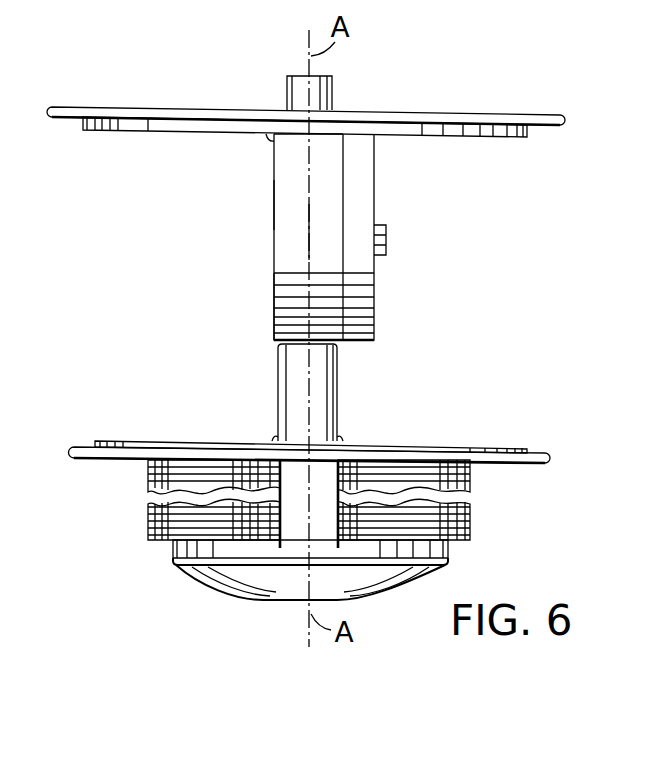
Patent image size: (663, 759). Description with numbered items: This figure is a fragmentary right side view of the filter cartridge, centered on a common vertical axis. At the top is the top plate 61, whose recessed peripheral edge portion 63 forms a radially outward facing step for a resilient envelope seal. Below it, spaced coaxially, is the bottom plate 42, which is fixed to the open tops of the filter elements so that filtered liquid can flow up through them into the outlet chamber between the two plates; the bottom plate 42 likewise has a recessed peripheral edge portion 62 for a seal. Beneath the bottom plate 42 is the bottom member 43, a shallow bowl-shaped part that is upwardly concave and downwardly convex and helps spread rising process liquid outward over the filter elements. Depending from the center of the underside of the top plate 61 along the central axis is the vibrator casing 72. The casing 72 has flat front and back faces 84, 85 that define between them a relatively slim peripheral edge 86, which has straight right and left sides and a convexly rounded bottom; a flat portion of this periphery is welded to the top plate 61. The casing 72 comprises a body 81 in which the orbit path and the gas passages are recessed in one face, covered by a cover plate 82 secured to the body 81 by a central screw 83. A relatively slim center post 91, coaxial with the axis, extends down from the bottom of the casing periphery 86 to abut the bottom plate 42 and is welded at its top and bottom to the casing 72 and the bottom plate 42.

The top plate 61 is at (400, 117).
The peripheral edge portion 63 is at (548, 134).
The front face 84 is at (374, 176).
The peripheral edge 86 is at (295, 146).
The back face 85 is at (274, 205).
The body 81 is at (305, 228).
The central screw 83 is at (386, 241).
The cover plate 82 is at (365, 280).
The vibrator casing 72 is at (272, 290).
The center post 91 is at (290, 382).
The peripheral edge portion 62 is at (537, 452).
The bottom plate 42 is at (490, 462).
The bottom member 43 is at (206, 580).